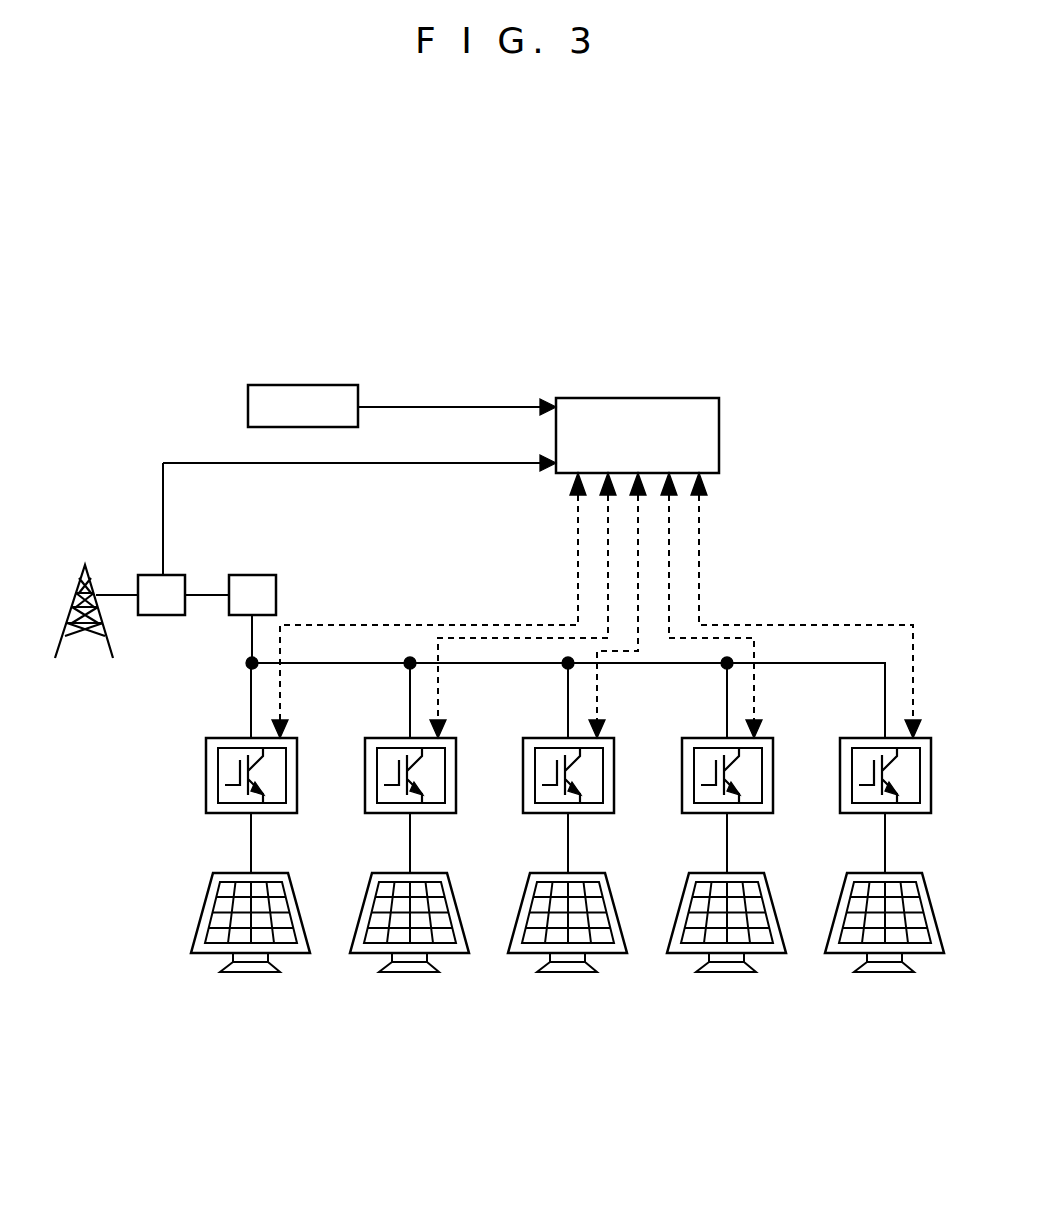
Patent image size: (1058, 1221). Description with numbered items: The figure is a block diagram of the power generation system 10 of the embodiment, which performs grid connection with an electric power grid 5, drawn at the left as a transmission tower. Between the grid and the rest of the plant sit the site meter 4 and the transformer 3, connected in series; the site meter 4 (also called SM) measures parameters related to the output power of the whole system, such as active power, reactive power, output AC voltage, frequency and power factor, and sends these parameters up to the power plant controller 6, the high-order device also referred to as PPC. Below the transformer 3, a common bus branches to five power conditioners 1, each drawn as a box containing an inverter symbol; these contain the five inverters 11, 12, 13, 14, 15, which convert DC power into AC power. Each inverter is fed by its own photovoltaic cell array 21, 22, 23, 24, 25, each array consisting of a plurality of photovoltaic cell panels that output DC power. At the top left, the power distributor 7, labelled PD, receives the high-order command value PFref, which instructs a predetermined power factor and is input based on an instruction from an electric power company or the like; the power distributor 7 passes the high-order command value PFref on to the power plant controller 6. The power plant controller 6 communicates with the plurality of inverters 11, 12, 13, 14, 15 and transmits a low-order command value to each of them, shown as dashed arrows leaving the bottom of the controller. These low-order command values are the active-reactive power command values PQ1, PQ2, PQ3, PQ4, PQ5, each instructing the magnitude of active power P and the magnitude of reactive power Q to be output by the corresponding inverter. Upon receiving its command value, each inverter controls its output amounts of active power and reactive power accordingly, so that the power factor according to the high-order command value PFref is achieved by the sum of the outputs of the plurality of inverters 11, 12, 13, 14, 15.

The power conditioner 1 is at (567, 871).
The transformer 3 is at (252, 575).
The site meter 4 is at (163, 616).
The electric power grid 5 is at (85, 566).
The power plant controller 6 is at (670, 398).
The power distributor 7 is at (248, 403).
The power generation system 10 is at (503, 313).
The inverter 11 is at (230, 803).
The inverter 12 is at (408, 805).
The inverter 13 is at (566, 805).
The inverter 14 is at (725, 805).
The inverter 15 is at (883, 805).
The photovoltaic cell array 21 is at (292, 953).
The photovoltaic cell array 22 is at (409, 976).
The photovoltaic cell array 23 is at (567, 976).
The photovoltaic cell array 24 is at (726, 976).
The photovoltaic cell array 25 is at (884, 976).
The high-order command value PFref is at (457, 391).
The active-reactive power command value PQ1 is at (578, 557).
The active-reactive power command value PQ2 is at (608, 591).
The active-reactive power command value PQ3 is at (638, 588).
The active-reactive power command value PQ4 is at (669, 550).
The active-reactive power command value PQ5 is at (699, 510).